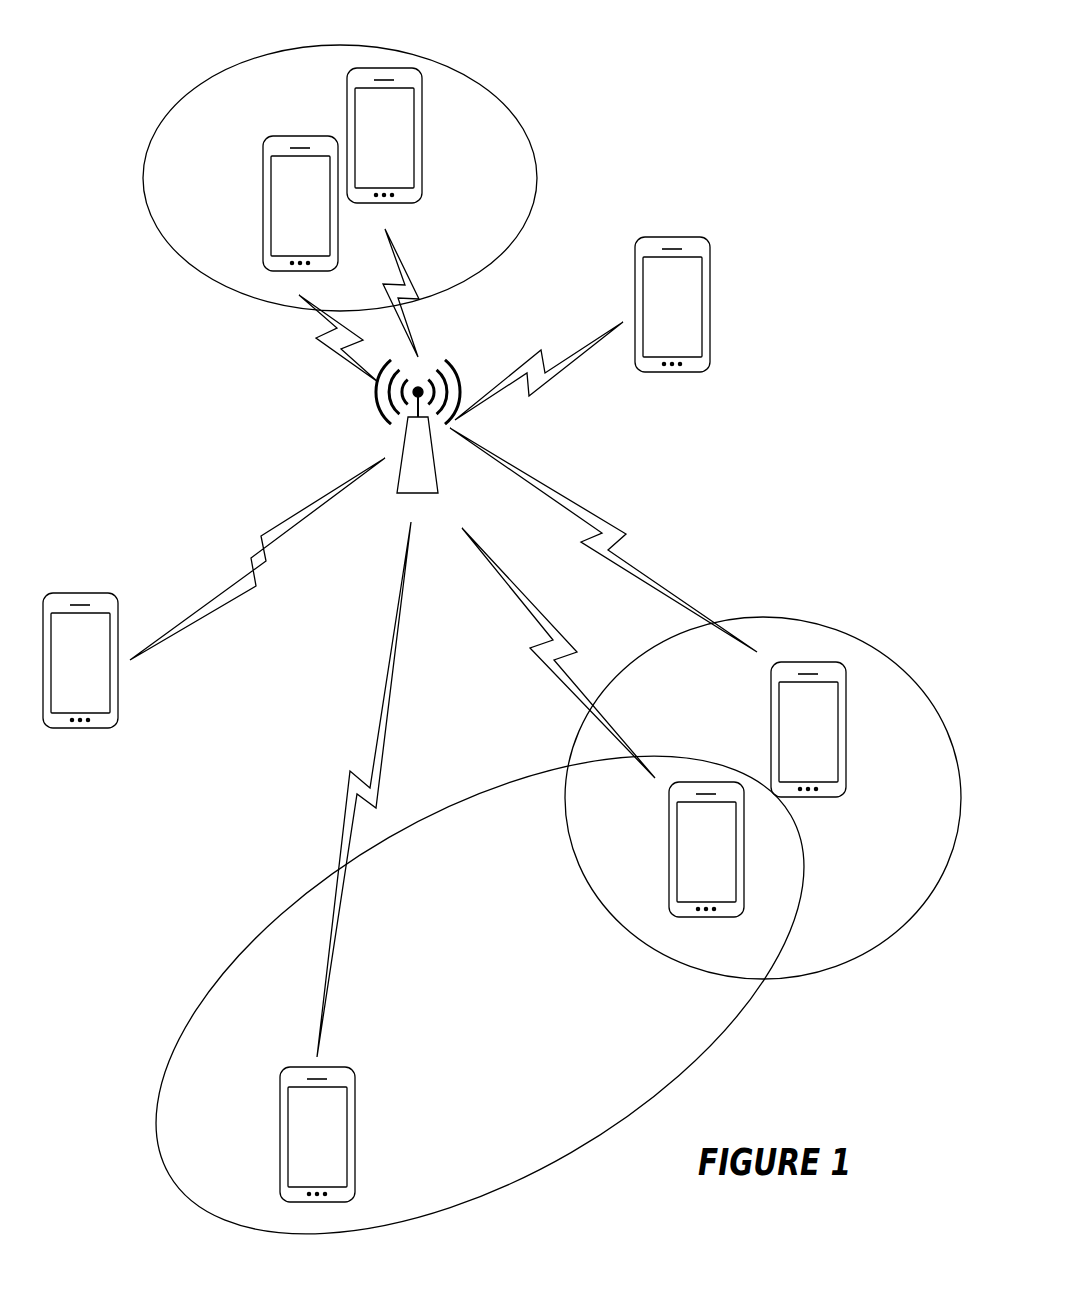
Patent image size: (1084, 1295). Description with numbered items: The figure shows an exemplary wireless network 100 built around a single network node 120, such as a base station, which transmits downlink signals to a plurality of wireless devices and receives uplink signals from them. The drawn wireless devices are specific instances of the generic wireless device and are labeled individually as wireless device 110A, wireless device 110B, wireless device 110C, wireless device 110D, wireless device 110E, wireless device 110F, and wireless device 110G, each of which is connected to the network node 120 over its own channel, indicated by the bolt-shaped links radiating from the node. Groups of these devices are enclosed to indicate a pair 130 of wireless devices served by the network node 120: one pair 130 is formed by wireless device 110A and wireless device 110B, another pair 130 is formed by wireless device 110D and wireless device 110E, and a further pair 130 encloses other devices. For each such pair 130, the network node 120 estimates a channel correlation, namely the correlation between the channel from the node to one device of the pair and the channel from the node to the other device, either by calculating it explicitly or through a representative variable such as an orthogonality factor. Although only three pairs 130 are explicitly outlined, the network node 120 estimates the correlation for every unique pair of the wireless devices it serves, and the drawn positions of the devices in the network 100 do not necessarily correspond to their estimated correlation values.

The wireless network 100 is at (757, 97).
The wireless device 110A is at (384, 212).
The wireless device 110B is at (320, 259).
The wireless device 110C is at (582, 328).
The wireless device 110D is at (648, 622).
The wireless device 110E is at (603, 731).
The wireless device 110F is at (345, 872).
The wireless device 110G is at (214, 604).
The network node 120 is at (418, 440).
The pair of wireless devices 130 is at (155, 121).